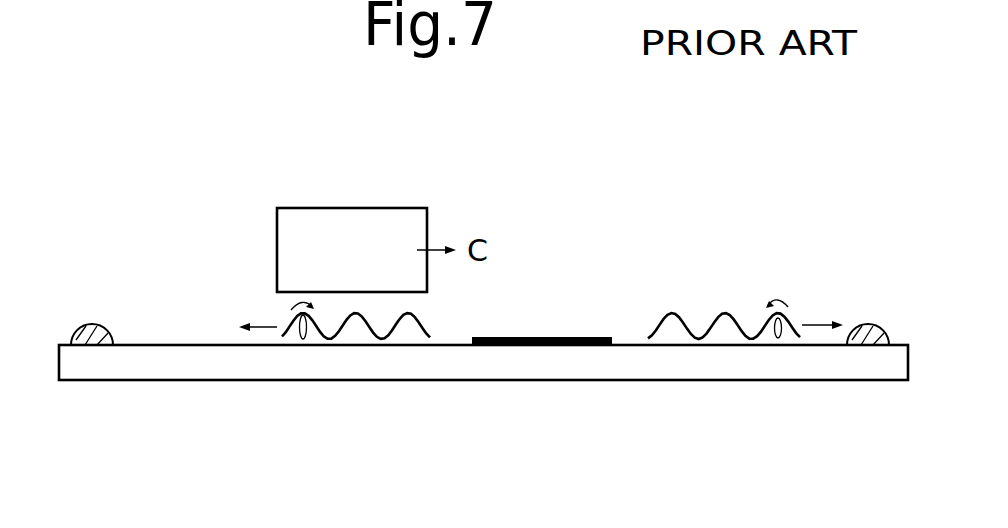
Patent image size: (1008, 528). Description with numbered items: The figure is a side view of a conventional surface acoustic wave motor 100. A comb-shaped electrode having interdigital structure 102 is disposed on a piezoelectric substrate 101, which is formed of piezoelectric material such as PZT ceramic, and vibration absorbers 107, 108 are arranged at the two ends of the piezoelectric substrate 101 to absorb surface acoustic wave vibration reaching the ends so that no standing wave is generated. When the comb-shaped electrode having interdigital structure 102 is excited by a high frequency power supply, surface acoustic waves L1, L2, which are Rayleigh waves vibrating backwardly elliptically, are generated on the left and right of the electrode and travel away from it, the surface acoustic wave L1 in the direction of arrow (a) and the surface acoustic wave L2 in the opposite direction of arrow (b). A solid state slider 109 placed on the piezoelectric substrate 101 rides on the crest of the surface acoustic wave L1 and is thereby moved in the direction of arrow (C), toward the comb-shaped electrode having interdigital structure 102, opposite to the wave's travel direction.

The surface acoustic wave motor 100 is at (315, 422).
The piezoelectric substrate 101 is at (663, 367).
The comb-shaped electrode having interdigital structure 102 is at (500, 337).
The vibration absorber 107 is at (870, 323).
The vibration absorber 108 is at (100, 323).
The solid state slider 109 is at (372, 232).
The surface acoustic wave L1 is at (352, 322).
The surface acoustic wave L2 is at (718, 322).